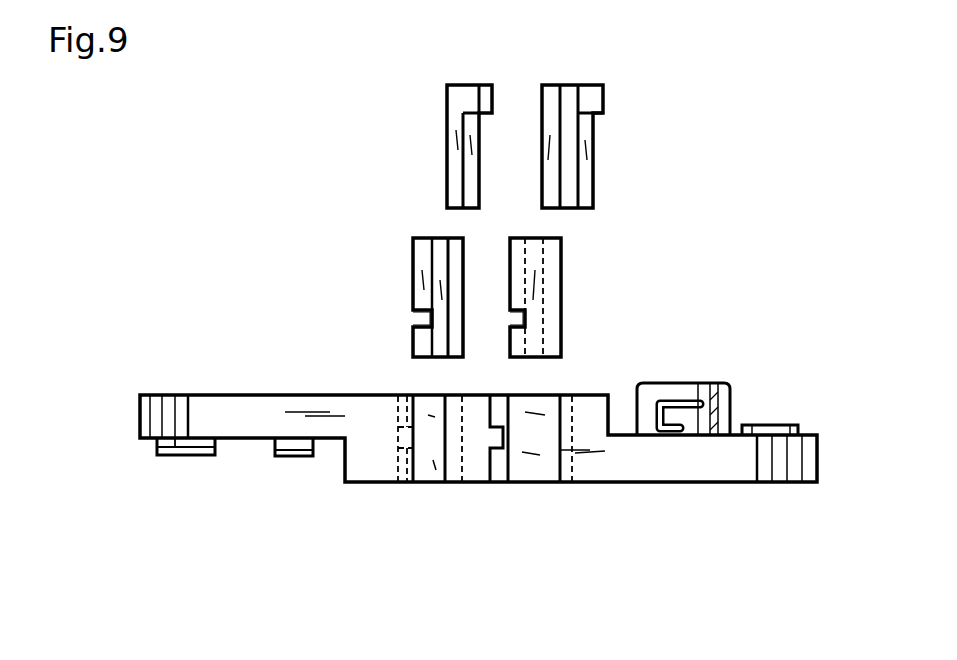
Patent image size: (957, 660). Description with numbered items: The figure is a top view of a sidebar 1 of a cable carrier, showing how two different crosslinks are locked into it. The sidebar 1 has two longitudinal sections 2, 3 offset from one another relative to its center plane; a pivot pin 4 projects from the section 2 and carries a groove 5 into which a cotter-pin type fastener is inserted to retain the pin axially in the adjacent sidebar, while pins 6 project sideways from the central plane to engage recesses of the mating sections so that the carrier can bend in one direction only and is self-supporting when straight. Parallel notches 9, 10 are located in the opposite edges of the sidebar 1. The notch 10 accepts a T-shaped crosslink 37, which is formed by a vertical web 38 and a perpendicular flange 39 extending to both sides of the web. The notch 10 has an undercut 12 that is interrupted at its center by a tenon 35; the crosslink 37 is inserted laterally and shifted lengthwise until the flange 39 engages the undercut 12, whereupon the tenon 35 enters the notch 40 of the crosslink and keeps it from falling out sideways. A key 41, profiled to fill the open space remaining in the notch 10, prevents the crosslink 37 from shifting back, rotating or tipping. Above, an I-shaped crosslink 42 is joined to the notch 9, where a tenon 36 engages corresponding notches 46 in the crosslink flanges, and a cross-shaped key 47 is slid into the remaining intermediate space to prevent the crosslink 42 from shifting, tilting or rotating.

The sidebar 1 is at (370, 412).
The longitudinal section 2 is at (208, 402).
The longitudinal section 3 is at (748, 457).
The pivot pin 4 is at (720, 392).
The groove 5 is at (688, 400).
The pins 6 is at (190, 455).
The notch 9 is at (543, 448).
The notch 10 is at (433, 452).
The undercut 12 is at (405, 398).
The tenon 35 is at (405, 433).
The tenon 36 is at (495, 438).
The T-shaped crosslink 37 is at (404, 263).
The vertical web 38 is at (433, 245).
The perpendicular flange 39 is at (452, 288).
The notch 40 is at (421, 325).
The key 41 is at (450, 142).
The I-shaped crosslink 42 is at (558, 287).
The notches 46 is at (517, 327).
The key 47 is at (565, 153).